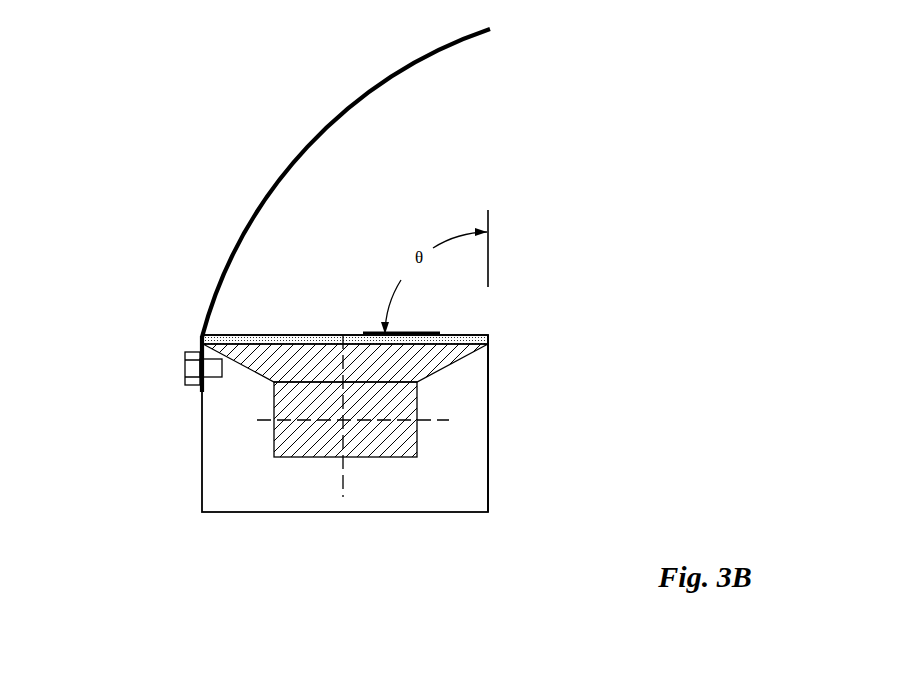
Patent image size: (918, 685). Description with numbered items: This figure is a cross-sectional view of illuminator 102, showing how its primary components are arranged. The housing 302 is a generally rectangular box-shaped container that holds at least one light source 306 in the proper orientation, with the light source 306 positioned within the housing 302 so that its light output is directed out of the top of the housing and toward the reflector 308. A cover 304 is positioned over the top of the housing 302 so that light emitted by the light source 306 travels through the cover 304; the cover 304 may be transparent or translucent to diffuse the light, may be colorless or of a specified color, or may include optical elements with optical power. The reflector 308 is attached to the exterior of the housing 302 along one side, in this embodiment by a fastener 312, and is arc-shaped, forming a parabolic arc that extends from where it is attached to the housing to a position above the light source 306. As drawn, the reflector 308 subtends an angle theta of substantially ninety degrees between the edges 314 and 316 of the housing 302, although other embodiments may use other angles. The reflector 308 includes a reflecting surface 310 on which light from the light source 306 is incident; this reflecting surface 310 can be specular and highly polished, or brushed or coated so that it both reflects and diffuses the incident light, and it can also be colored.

The illuminator 102 is at (118, 135).
The housing 302 is at (322, 512).
The cover 304 is at (488, 342).
The light source 306 is at (285, 441).
The reflector 308 is at (346, 183).
The reflecting surface 310 is at (430, 62).
The fastener 312 is at (192, 368).
The edge 314 is at (488, 335).
The edge 316 is at (202, 335).